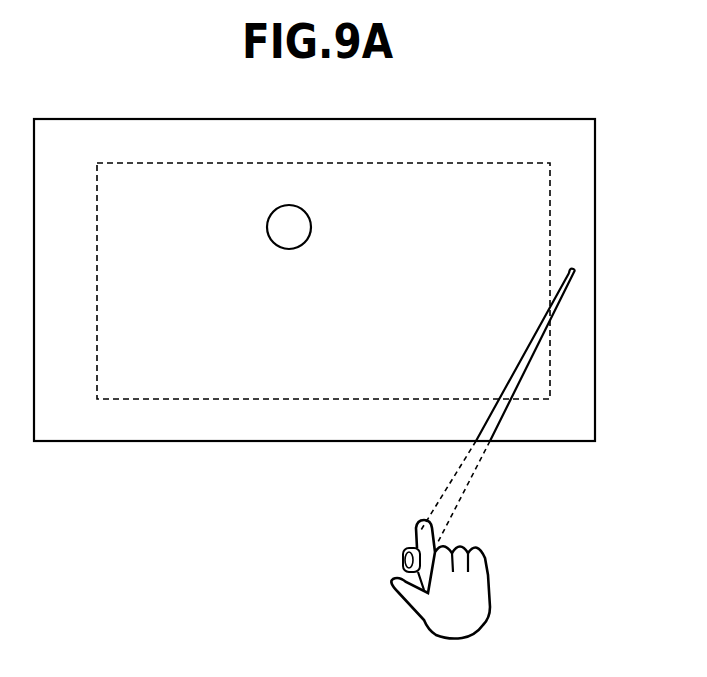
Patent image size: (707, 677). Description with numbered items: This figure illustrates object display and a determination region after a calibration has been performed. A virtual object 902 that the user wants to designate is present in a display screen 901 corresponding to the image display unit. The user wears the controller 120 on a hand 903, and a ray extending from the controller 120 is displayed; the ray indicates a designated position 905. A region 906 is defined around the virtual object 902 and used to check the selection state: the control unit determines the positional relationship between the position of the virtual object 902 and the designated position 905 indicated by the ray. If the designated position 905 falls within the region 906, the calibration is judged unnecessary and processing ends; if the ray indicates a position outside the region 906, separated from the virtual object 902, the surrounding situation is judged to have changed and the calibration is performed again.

The display screen 901 is at (595, 230).
The region 906 is at (432, 163).
The virtual object 902 is at (311, 226).
The designated position 905 is at (571, 268).
The hand 903 is at (410, 615).
The controller 120 is at (408, 550).